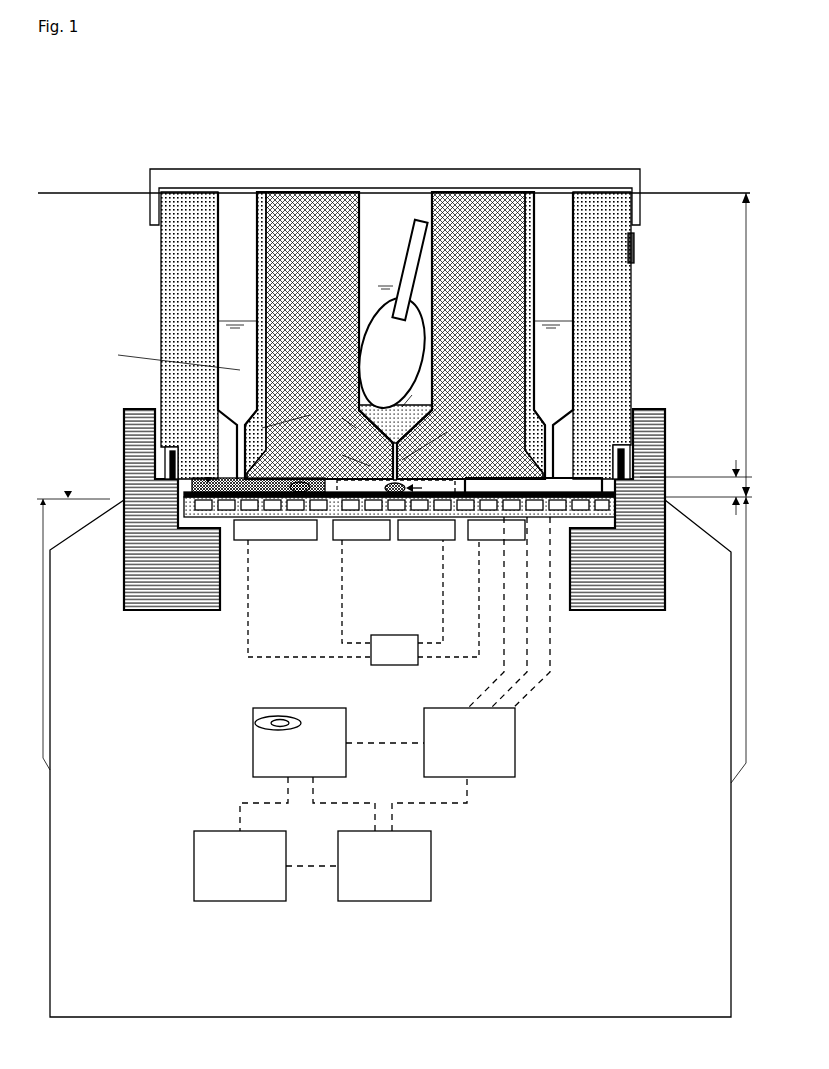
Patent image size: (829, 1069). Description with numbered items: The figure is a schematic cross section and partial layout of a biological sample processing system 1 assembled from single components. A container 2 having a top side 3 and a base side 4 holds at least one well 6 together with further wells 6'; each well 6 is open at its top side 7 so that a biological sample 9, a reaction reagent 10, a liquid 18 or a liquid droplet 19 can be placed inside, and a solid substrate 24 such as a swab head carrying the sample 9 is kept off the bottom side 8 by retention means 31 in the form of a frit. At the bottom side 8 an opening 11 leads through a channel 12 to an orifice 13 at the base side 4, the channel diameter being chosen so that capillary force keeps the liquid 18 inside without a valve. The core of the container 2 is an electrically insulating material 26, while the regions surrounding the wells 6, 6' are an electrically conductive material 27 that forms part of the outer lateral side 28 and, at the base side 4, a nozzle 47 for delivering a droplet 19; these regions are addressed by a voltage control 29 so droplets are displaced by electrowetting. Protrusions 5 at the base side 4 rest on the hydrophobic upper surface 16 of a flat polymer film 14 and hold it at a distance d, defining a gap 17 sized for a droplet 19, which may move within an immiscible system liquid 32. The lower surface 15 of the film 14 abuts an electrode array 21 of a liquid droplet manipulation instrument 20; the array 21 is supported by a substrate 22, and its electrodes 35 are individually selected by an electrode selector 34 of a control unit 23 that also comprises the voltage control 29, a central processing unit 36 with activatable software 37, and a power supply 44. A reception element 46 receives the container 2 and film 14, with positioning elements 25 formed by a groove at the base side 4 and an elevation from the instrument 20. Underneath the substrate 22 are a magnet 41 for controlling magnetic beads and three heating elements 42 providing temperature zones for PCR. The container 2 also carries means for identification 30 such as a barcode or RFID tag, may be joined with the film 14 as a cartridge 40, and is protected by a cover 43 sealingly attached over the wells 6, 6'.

The biological sample processing system 1 is at (680, 134).
The container 2 is at (492, 335).
The top side 3 is at (614, 200).
The base side 4 is at (183, 492).
The protrusions 5 is at (122, 482).
The well 6 is at (384, 256).
The well 6' is at (395, 335).
The top side 7 is at (242, 200).
The bottom side 8 is at (434, 435).
The biological sample 9 is at (380, 520).
The reaction reagent 10 is at (166, 357).
The opening 11 is at (309, 416).
The channel 12 is at (341, 454).
The orifice 13 is at (405, 474).
The flat polymer film 14 is at (200, 507).
The lower surface 15 is at (462, 500).
The hydrophobic upper surface 16 is at (588, 485).
The gap 17 is at (628, 455).
The liquid 18 is at (420, 297).
The liquid droplet 19 is at (300, 493).
The liquid droplet manipulation instrument 20 is at (50, 772).
The electrode array 21 is at (615, 505).
The substrate 22 is at (325, 540).
The control unit 23 is at (363, 602).
The solid substrate 24 is at (401, 371).
The positioning elements 25 is at (165, 450).
The electrically insulating material 26 is at (317, 335).
The electrically conductive material 27 is at (200, 335).
The outer lateral side 28 is at (640, 314).
The voltage control 29 is at (384, 866).
The means for identification 30 is at (634, 248).
The retention means 31 is at (413, 395).
The immiscible system liquid 32 is at (272, 520).
The electrode selector 34 is at (469, 742).
The electrode 35 is at (190, 516).
The central processing unit 36 is at (353, 769).
The activatable software 37 is at (255, 722).
The cartridge 40 is at (399, 345).
The magnet 41 is at (274, 539).
The heating element 42 is at (357, 539).
The cover 43 is at (170, 183).
The power supply 44 is at (266, 866).
The reception element 46 is at (186, 590).
The nozzle 47 is at (492, 421).
The distance d is at (696, 484).